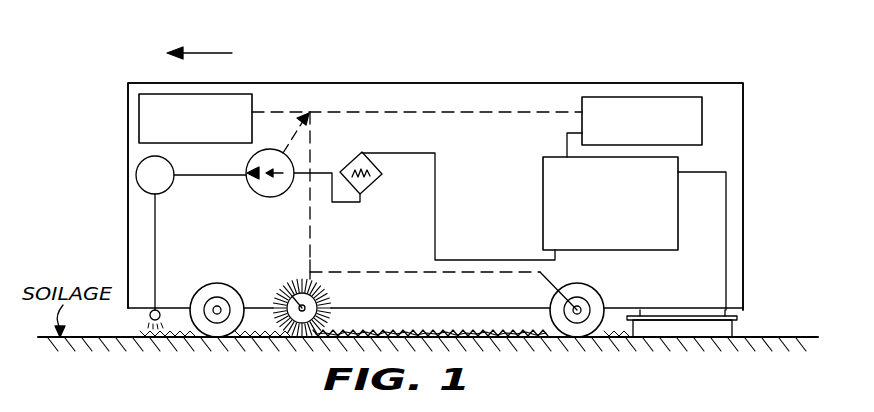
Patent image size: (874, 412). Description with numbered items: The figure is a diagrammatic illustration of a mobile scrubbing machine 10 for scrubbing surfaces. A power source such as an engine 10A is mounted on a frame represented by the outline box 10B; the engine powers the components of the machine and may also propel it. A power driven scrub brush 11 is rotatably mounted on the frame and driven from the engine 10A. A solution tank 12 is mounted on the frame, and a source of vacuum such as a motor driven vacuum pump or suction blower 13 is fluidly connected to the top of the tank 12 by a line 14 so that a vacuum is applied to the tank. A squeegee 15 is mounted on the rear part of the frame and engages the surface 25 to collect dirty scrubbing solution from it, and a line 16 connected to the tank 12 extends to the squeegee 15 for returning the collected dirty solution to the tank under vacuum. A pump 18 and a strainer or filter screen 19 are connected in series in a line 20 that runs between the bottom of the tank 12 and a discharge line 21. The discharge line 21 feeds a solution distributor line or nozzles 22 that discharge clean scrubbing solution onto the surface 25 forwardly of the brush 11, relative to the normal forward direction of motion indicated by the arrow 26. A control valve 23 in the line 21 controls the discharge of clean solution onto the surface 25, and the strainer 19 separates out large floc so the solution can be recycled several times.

The mobile scrubbing machine 10 is at (757, 90).
The engine 10A is at (250, 98).
The frame 10B is at (482, 83).
The scrub brush 11 is at (330, 302).
The solution tank 12 is at (640, 242).
The suction blower 13 is at (702, 120).
The line 14 is at (567, 143).
The squeegee 15 is at (733, 330).
The line 16 is at (725, 238).
The pump 18 is at (265, 198).
The strainer or filter screen 19 is at (372, 155).
The line 20 is at (435, 225).
The discharge line 21 is at (155, 244).
The solution distributor nozzles 22 is at (150, 317).
The control valve 23 is at (167, 184).
The surface 25 is at (803, 337).
The arrow 26 is at (208, 53).